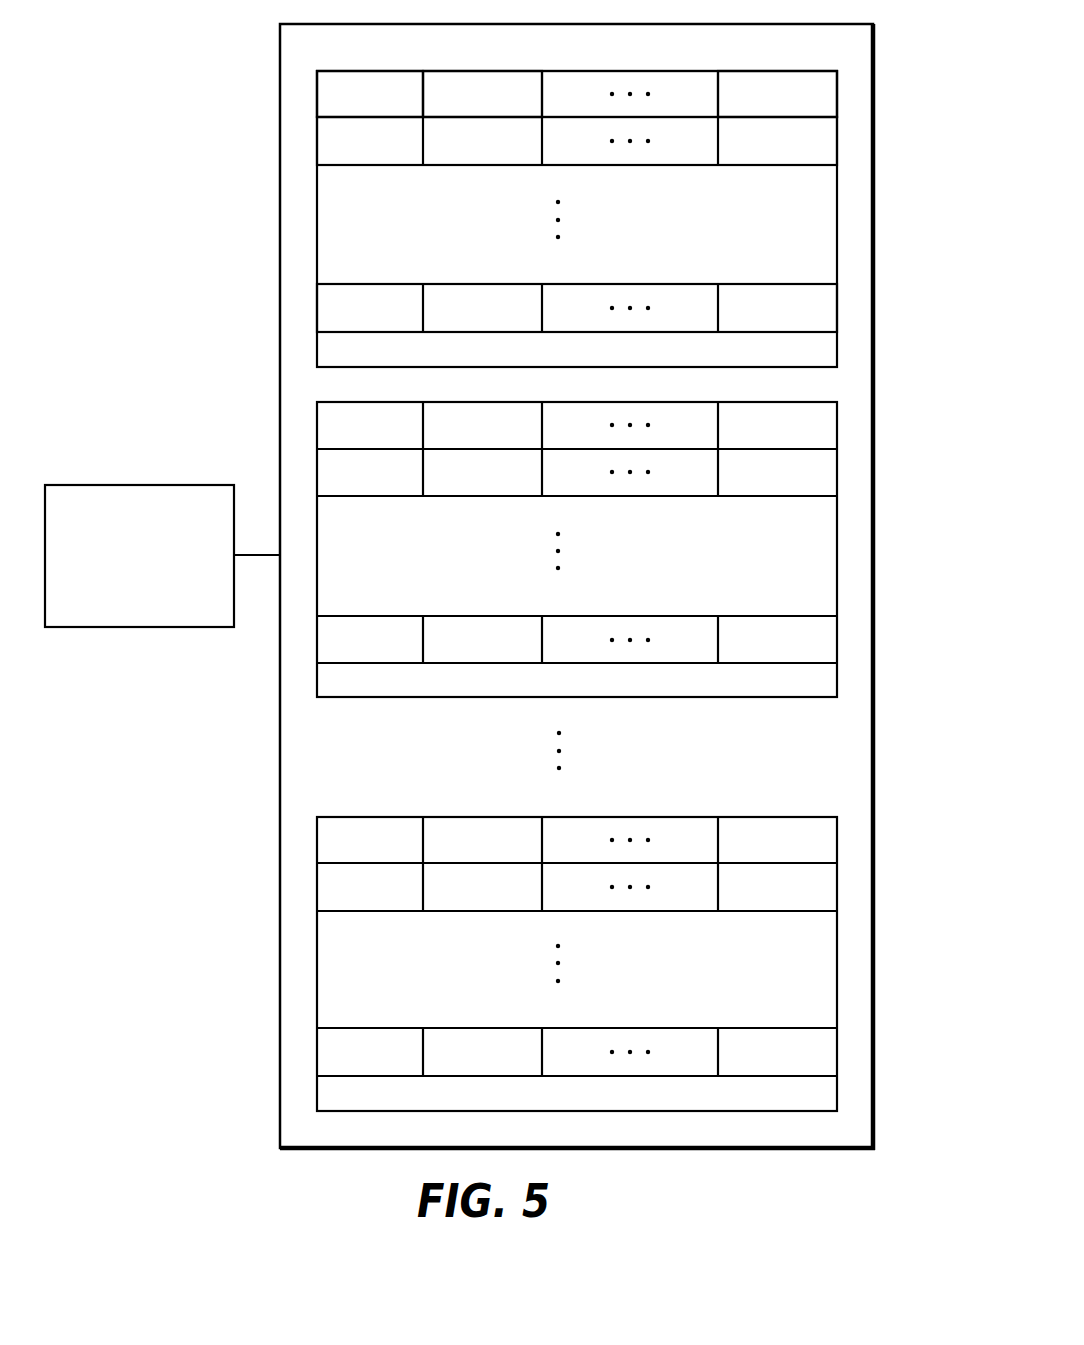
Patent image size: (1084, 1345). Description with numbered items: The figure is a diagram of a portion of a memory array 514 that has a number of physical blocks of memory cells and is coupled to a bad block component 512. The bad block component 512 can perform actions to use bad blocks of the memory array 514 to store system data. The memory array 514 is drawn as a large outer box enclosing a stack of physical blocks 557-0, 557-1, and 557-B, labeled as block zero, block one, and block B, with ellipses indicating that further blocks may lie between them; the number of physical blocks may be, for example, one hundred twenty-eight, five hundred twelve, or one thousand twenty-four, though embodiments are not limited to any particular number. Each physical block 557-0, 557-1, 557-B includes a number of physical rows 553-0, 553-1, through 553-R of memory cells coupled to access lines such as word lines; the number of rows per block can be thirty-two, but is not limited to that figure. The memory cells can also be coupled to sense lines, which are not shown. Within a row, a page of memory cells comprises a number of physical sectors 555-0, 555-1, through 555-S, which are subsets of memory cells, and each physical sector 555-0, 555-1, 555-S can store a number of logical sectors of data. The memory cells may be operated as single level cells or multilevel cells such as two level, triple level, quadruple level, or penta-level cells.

The memory array 514 is at (156, 29).
The bad block component 512 is at (120, 493).
The physical row 553-0 is at (317, 96).
The physical row 553-1 is at (317, 143).
The physical row 553-R is at (317, 310).
The physical sector 555-0 is at (369, 78).
The physical sector 555-1 is at (482, 78).
The physical sector 555-S is at (778, 78).
The physical block 557-0 is at (837, 226).
The physical block 557-1 is at (837, 557).
The physical block 557-B is at (837, 969).